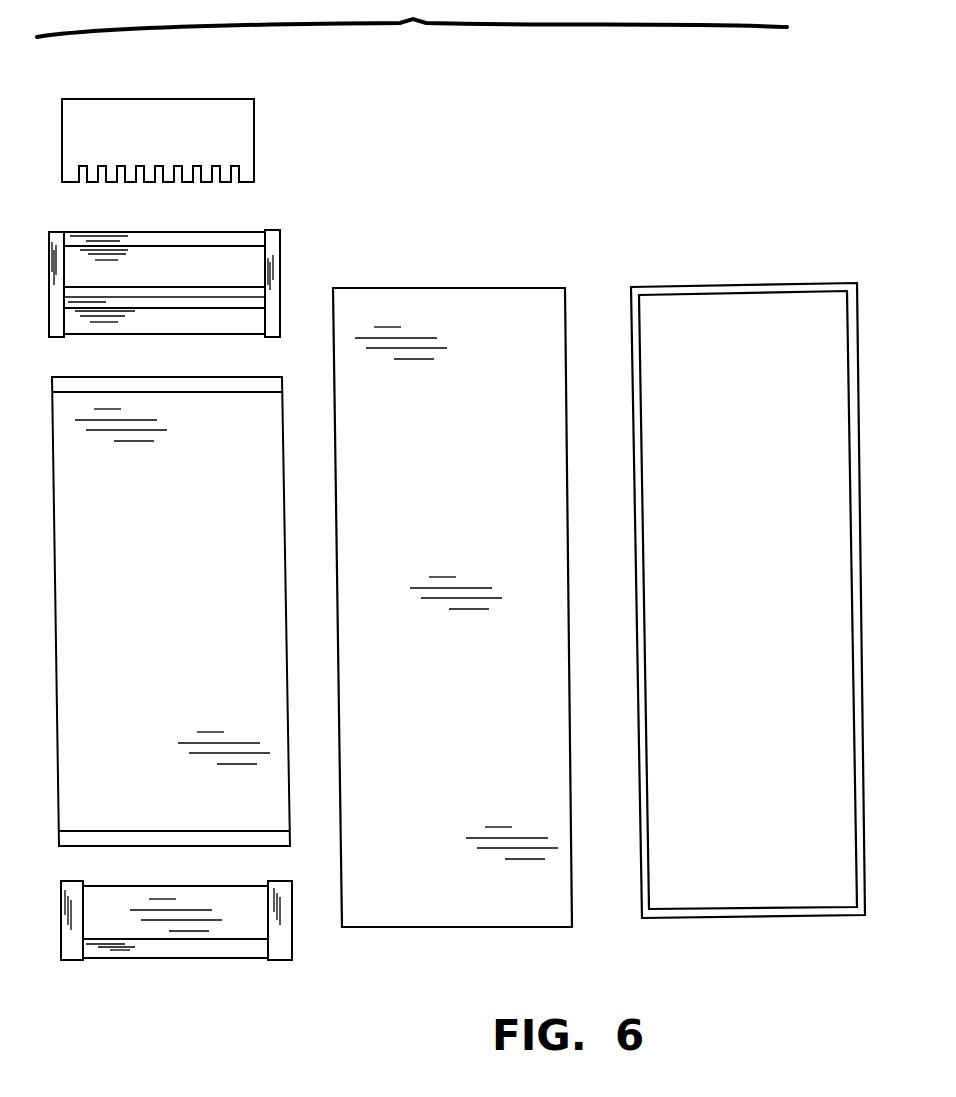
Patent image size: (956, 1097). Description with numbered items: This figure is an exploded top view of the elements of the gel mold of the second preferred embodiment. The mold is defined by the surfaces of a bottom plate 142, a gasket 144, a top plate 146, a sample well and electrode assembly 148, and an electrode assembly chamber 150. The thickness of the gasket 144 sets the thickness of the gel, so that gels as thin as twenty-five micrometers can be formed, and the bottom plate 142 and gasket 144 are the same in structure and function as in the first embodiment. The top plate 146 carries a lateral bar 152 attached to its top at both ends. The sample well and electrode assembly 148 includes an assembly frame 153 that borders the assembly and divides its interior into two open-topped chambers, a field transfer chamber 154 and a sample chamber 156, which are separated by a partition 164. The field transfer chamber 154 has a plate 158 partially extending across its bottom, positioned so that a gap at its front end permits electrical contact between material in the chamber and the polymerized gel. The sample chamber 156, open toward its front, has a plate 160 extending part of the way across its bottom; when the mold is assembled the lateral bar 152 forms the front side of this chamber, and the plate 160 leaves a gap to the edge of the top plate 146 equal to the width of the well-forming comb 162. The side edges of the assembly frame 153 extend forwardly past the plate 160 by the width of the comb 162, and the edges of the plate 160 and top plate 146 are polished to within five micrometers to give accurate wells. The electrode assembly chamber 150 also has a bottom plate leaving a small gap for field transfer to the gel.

The bottom plate 142 is at (459, 335).
The gasket 144 is at (779, 288).
The top plate 146 is at (190, 497).
The sample well and electrode assembly 148 is at (189, 264).
The electrode assembly chamber 150 is at (202, 947).
The lateral bar 152 is at (227, 837).
The assembly frame 153 is at (57, 236).
The field transfer chamber 154 is at (250, 256).
The sample chamber 156 is at (250, 319).
The plate 158 is at (206, 276).
The plate 160 is at (216, 328).
The well-forming comb 162 is at (235, 133).
The partition 164 is at (248, 922).